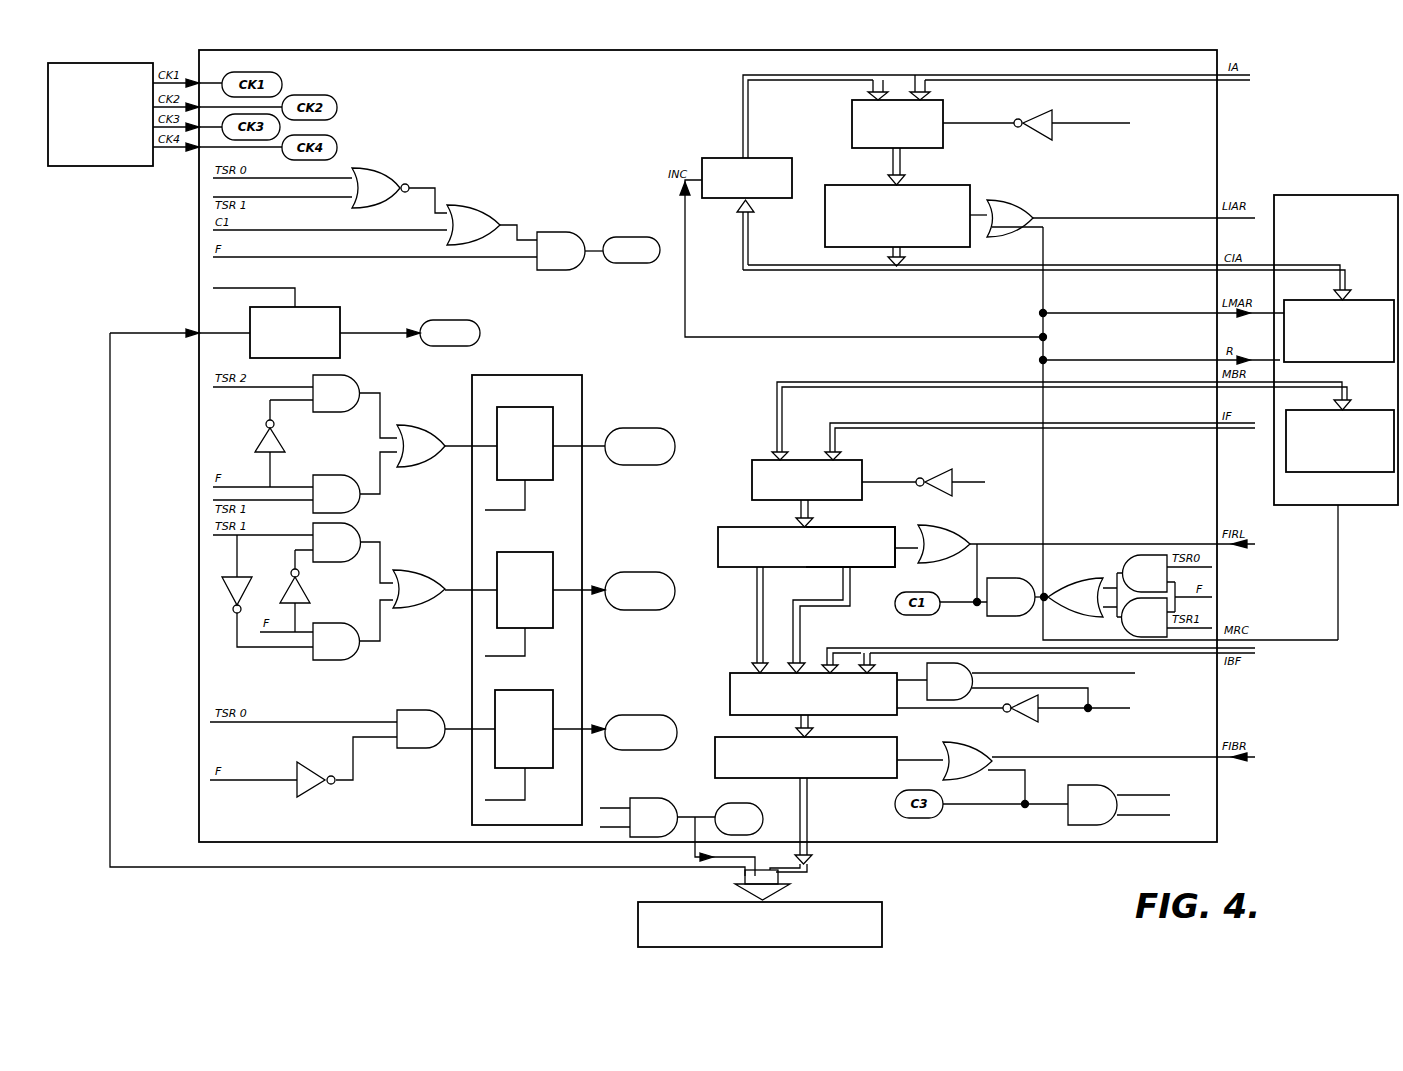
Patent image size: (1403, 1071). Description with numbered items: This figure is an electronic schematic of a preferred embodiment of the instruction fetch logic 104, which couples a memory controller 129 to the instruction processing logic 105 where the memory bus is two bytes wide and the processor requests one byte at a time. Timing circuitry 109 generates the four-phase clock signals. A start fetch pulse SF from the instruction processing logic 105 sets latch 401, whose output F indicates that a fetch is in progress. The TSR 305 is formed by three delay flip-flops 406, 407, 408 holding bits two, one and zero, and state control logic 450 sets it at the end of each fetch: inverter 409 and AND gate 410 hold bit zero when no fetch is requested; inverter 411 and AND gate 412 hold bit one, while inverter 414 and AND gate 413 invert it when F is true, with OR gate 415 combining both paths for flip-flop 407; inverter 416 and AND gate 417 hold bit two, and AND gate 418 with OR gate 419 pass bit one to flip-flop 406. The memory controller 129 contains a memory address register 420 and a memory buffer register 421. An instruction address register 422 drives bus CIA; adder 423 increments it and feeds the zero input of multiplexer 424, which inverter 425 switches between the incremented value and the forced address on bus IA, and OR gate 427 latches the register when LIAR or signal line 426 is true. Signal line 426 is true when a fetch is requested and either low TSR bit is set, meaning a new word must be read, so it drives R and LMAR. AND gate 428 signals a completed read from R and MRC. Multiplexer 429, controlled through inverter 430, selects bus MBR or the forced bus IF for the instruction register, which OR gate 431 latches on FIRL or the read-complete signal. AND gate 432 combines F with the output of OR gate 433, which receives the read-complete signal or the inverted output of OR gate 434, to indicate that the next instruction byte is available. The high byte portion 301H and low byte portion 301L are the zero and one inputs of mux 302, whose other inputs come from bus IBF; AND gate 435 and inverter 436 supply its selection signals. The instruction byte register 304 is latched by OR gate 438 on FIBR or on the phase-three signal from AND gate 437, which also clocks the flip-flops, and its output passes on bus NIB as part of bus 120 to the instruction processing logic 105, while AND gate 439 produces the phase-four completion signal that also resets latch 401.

The instruction fetch logic 104 is at (1217, 152).
The instruction processing logic 105 is at (638, 935).
The timing circuitry 109 is at (108, 166).
The bus 120 is at (782, 878).
The memory controller 129 is at (1372, 195).
The high byte portion 301H is at (733, 527).
The low byte portion 301L is at (857, 527).
The mux 302 is at (745, 673).
The instruction byte register 304 is at (725, 737).
The translation state register (TSR) 305 is at (565, 375).
The latch 401 is at (345, 315).
The delay flip-flop 406 is at (520, 407).
The delay flip-flop 407 is at (520, 552).
The delay flip-flop 408 is at (510, 690).
The inverter 409 is at (315, 797).
The AND gate 410 is at (412, 748).
The inverter 411 is at (310, 590).
The AND gate 412 is at (355, 524).
The AND gate 413 is at (325, 660).
The inverter 414 is at (243, 577).
The OR gate 415 is at (405, 608).
The inverter 416 is at (287, 442).
The AND gate 417 is at (350, 375).
The AND gate 418 is at (355, 513).
The OR gate 419 is at (415, 467).
The memory address register 420 is at (1367, 300).
The memory buffer register 421 is at (1315, 472).
The instruction address register 422 is at (945, 185).
The adder 423 is at (722, 158).
The multiplexer 424 is at (852, 132).
The inverter 425 is at (1040, 140).
The signal line 426 is at (1043, 470).
The OR gate 427 is at (1025, 205).
The AND gate 428 is at (1030, 565).
The multiplexer 429 is at (752, 470).
The inverter 430 is at (932, 470).
The OR gate 431 is at (950, 527).
The AND gate 432 is at (575, 232).
The OR gate 433 is at (490, 208).
The OR gate 434 is at (385, 168).
The AND gate 435 is at (960, 663).
The inverter 436 is at (1022, 722).
The AND gate 437 is at (1075, 825).
The OR gate 438 is at (970, 742).
The AND gate 439 is at (645, 798).
The state control logic 450 is at (205, 462).